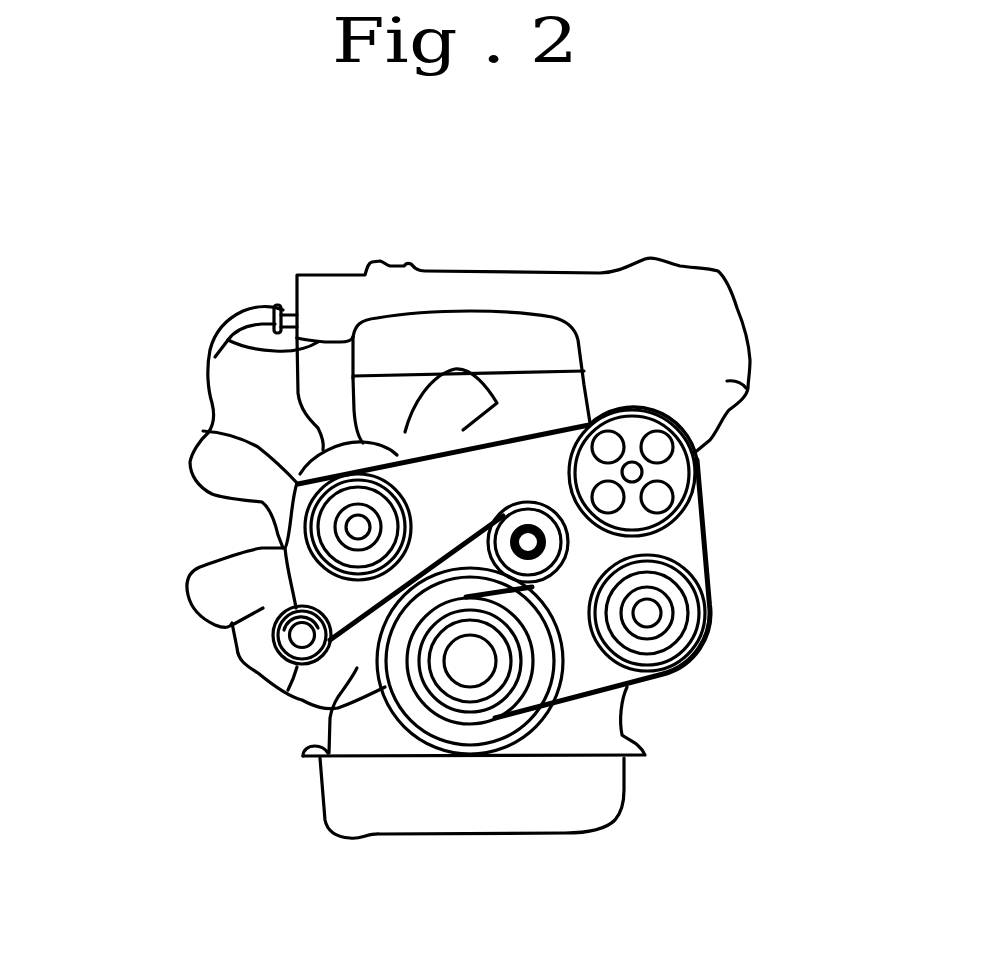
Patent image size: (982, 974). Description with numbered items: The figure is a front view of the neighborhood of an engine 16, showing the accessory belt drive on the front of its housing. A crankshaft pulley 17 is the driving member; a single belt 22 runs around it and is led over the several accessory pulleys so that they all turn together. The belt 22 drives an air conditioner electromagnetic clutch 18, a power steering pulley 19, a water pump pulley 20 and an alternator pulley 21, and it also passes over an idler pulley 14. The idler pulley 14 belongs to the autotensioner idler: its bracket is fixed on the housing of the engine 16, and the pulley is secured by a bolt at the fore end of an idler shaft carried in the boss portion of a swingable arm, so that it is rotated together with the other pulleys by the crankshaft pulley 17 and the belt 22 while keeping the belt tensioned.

The idler pulley 14 is at (503, 512).
The engine 16 is at (550, 295).
The crankshaft pulley 17 is at (338, 709).
The air conditioner electromagnetic clutch 18 is at (690, 633).
The power steering pulley 19 is at (634, 438).
The water pump pulley 20 is at (203, 431).
The alternator pulley 21 is at (273, 636).
The belt 22 is at (703, 537).